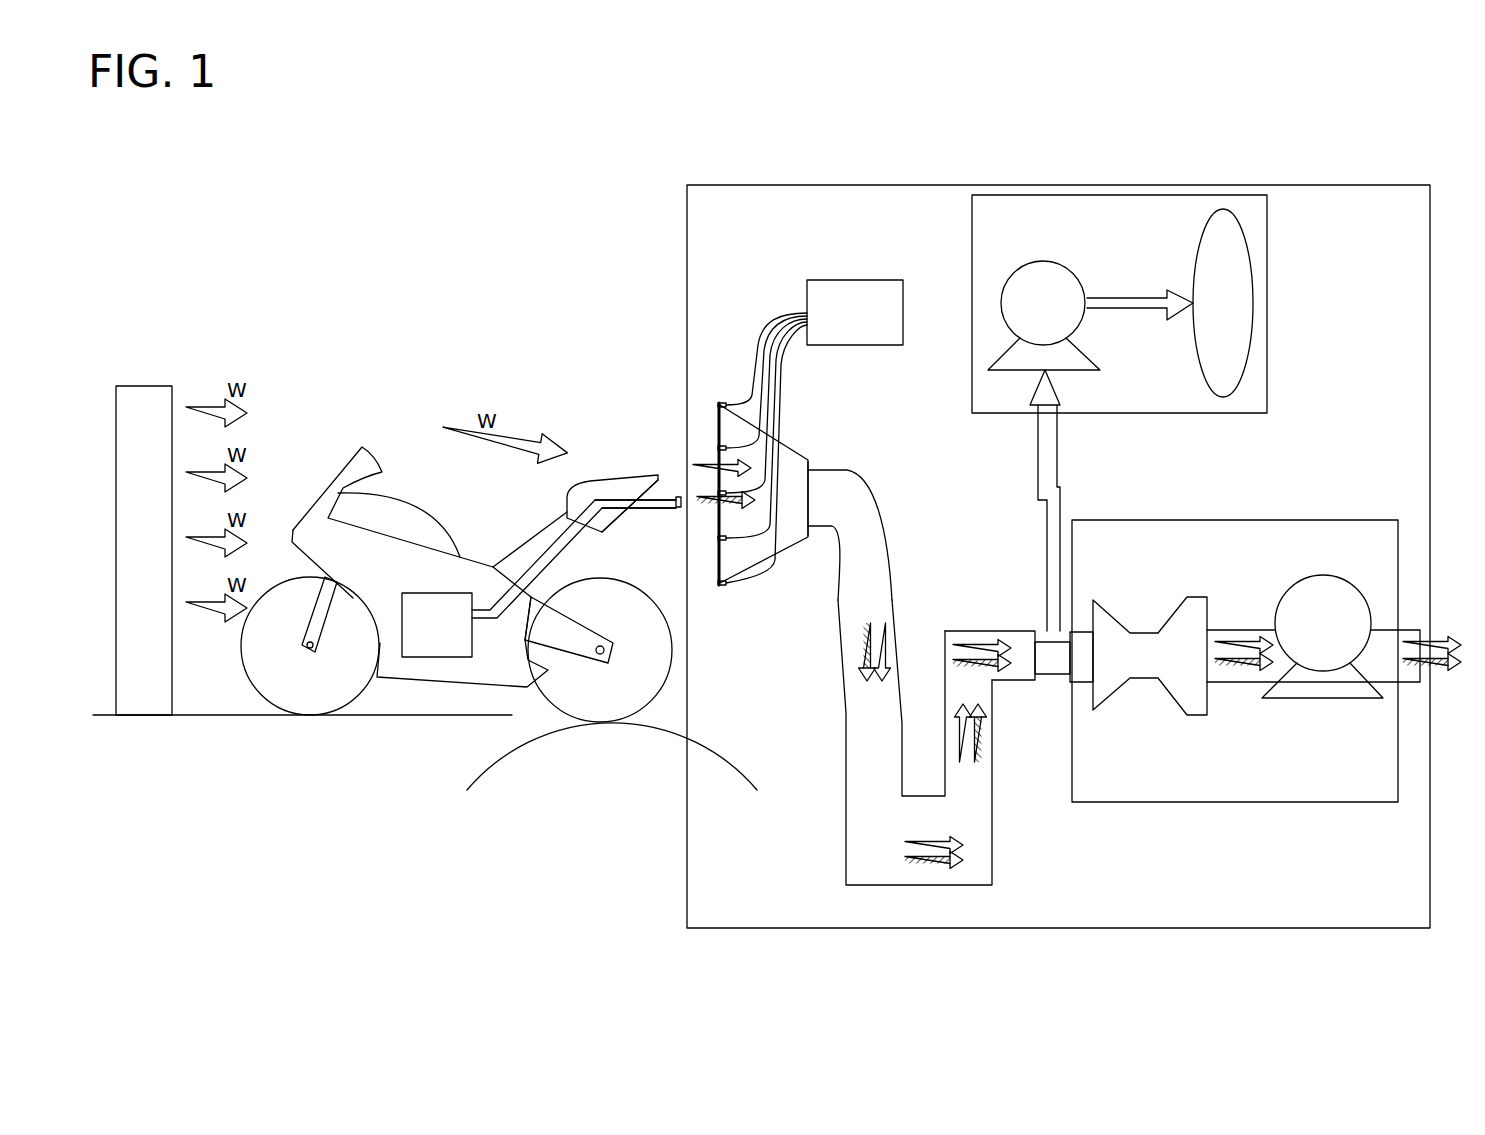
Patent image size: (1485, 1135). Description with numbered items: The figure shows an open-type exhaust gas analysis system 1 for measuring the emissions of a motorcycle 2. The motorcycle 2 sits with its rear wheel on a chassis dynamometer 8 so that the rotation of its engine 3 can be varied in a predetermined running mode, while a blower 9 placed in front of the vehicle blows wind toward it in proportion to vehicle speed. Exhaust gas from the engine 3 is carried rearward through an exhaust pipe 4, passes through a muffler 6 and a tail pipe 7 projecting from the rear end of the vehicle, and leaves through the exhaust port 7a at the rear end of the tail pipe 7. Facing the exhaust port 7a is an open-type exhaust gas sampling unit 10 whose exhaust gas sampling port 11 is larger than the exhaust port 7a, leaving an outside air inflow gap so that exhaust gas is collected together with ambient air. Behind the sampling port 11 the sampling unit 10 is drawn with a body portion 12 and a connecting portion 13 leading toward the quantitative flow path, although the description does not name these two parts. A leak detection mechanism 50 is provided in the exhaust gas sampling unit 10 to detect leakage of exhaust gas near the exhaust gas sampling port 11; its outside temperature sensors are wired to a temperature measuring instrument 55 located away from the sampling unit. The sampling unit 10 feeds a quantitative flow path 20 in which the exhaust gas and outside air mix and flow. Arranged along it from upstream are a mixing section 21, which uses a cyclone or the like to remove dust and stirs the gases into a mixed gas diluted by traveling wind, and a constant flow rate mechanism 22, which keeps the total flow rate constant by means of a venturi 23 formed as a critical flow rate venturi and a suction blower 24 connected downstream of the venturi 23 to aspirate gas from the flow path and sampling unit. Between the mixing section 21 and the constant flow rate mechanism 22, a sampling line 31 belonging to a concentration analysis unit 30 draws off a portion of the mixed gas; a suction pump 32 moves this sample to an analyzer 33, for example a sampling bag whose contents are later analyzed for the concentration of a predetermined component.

The open-type exhaust gas analysis system 1 is at (882, 181).
The motorcycle 2 is at (353, 437).
The engine 3 is at (422, 650).
The exhaust pipe 4 is at (522, 578).
The muffler 6 is at (628, 522).
The tail pipe 7 is at (670, 498).
The exhaust port 7a is at (683, 505).
The chassis dynamometer 8 is at (512, 758).
The blower 9 is at (156, 392).
The exhaust gas sampling unit 10 is at (797, 433).
The exhaust gas sampling port 11 is at (715, 417).
The collector wall 12 is at (808, 448).
The duct 13 is at (832, 466).
The quantitative flow path 20 is at (992, 601).
The mixing section 21 is at (848, 876).
The constant flow rate mechanism 22 is at (1302, 520).
The venturi 23 is at (1147, 680).
The suction blower 24 is at (1317, 580).
The concentration analysis unit 30 is at (1296, 254).
The sampling line 31 is at (1038, 440).
The suction pump 32 is at (1037, 262).
The analyzer 33 is at (1200, 243).
The leak detection mechanism 50 is at (773, 305).
The temperature measuring instrument 55 is at (850, 282).